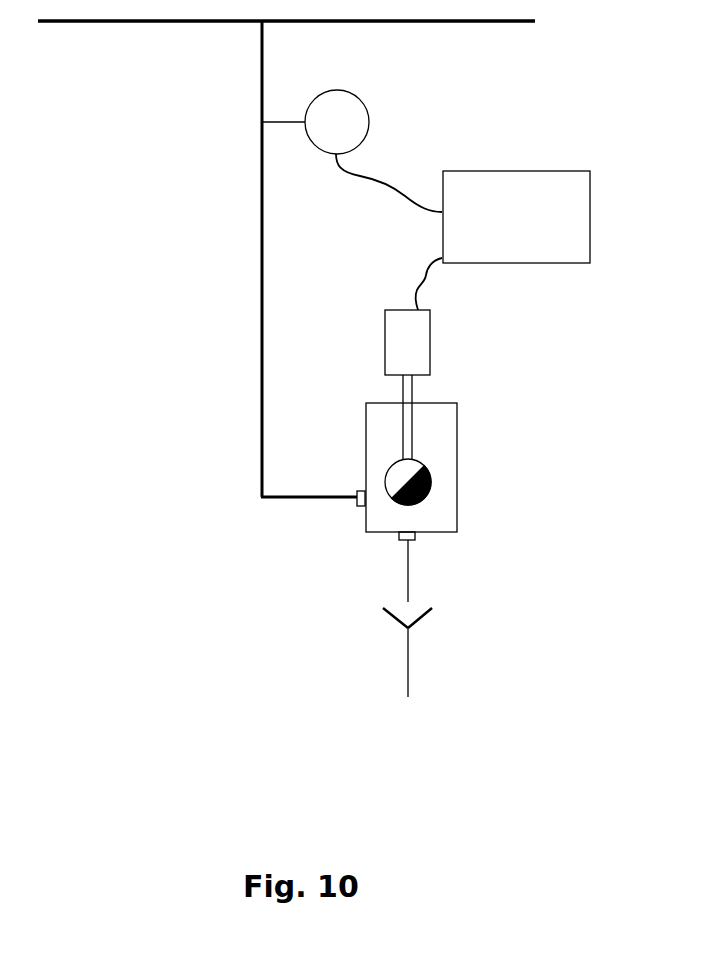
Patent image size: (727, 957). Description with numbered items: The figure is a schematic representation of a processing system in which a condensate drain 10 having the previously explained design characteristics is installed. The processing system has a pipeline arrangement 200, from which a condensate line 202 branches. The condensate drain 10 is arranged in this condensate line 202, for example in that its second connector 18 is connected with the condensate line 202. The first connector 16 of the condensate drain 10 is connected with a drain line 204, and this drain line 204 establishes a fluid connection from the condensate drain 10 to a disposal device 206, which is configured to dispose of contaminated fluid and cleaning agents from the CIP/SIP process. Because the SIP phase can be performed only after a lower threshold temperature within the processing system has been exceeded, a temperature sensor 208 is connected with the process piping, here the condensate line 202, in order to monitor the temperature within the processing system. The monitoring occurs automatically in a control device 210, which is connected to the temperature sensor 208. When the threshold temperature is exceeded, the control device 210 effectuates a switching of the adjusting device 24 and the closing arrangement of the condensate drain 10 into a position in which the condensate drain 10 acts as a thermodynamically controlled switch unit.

The condensate drain 10 is at (445, 428).
The first connector 16 is at (415, 540).
The second connector 18 is at (360, 500).
The adjusting device 24 is at (422, 365).
The pipeline arrangement 200 is at (185, 23).
The condensate line 202 is at (262, 278).
The drain line 204 is at (405, 567).
The disposal device 206 is at (405, 664).
The temperature sensor 208 is at (362, 118).
The control device 210 is at (522, 187).